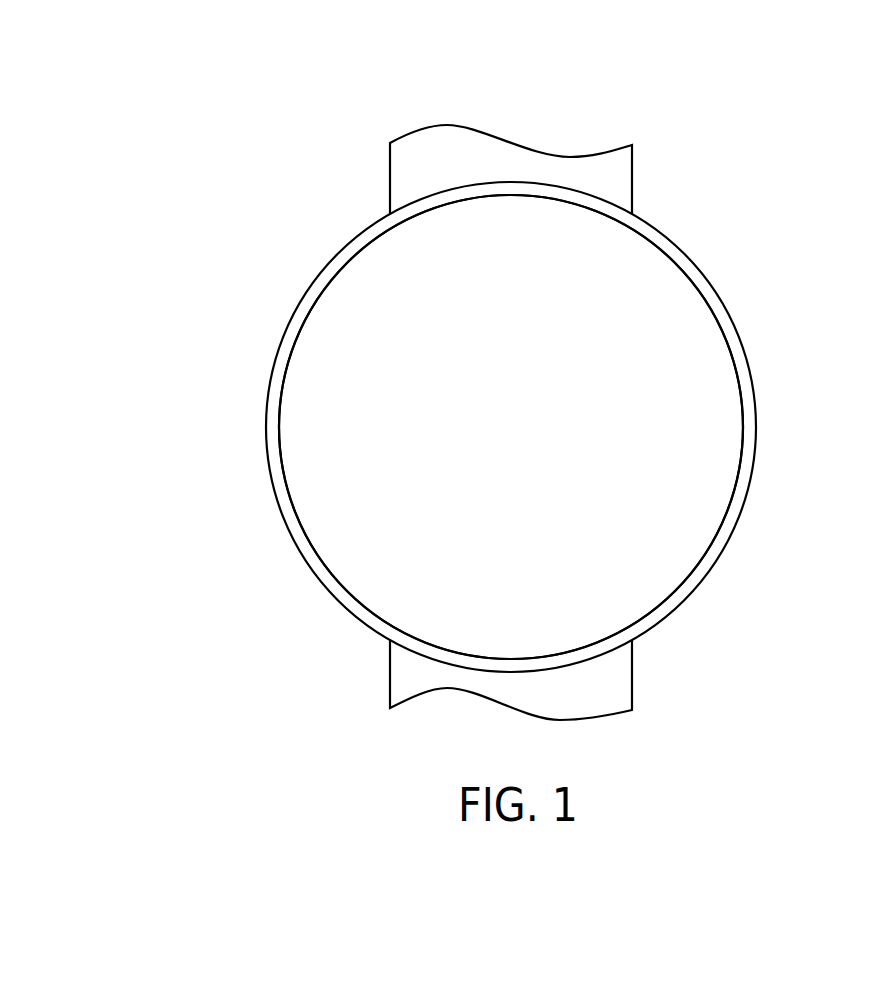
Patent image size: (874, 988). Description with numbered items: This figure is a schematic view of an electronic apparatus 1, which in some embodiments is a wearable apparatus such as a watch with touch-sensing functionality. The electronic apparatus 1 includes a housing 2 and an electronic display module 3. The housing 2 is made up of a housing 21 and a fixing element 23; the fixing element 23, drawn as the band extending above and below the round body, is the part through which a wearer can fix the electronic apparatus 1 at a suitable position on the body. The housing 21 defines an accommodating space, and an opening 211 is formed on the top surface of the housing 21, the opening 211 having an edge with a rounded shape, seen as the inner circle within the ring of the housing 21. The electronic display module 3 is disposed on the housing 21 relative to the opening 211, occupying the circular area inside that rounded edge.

The electronic apparatus 1 is at (210, 113).
The housing 2 is at (298, 228).
The housing 21 is at (757, 422).
The opening 211 is at (740, 472).
The fixing element 23 is at (623, 178).
The electronic display module 3 is at (663, 313).